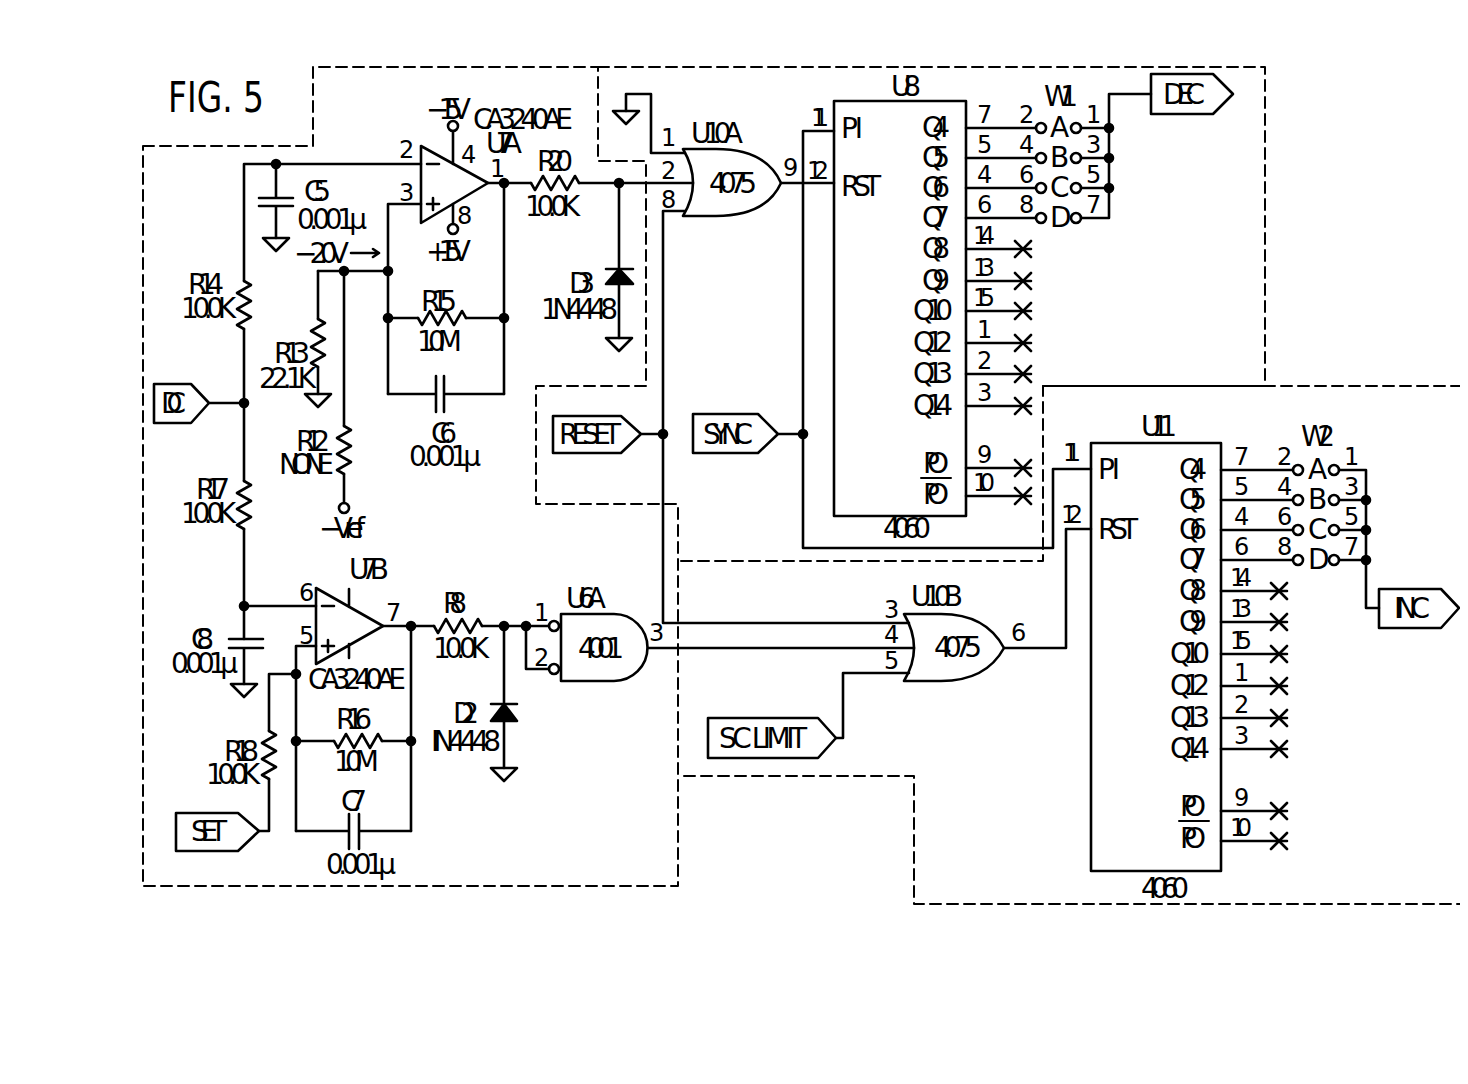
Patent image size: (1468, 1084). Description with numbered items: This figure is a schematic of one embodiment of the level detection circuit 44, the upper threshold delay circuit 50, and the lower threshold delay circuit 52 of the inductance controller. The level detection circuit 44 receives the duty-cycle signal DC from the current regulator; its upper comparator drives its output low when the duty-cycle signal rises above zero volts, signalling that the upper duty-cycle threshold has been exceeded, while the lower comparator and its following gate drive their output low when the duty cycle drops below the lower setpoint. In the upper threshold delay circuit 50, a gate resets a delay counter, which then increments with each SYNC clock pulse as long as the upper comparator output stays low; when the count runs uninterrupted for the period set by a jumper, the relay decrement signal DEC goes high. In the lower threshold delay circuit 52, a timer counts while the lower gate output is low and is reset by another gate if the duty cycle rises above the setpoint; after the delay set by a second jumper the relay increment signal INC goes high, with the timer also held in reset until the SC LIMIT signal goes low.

The level detection circuit 44 is at (688, 831).
The upper threshold delay circuit 50 is at (1273, 180).
The lower threshold delay circuit 52 is at (908, 829).